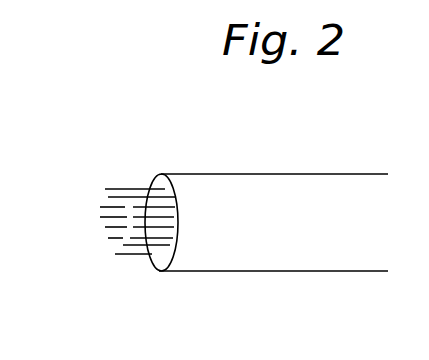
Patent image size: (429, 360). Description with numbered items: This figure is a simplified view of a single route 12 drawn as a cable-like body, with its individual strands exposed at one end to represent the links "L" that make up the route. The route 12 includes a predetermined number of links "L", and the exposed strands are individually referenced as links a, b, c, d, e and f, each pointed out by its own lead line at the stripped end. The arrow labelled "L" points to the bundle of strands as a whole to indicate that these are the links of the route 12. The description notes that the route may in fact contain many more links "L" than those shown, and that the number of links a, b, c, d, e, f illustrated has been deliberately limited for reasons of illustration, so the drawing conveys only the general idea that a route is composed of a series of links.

The route 12 is at (332, 155).
The links L is at (145, 170).
The link a is at (117, 186).
The link b is at (103, 190).
The link c is at (102, 195).
The link d is at (108, 242).
The link e is at (120, 247).
The link f is at (131, 254).